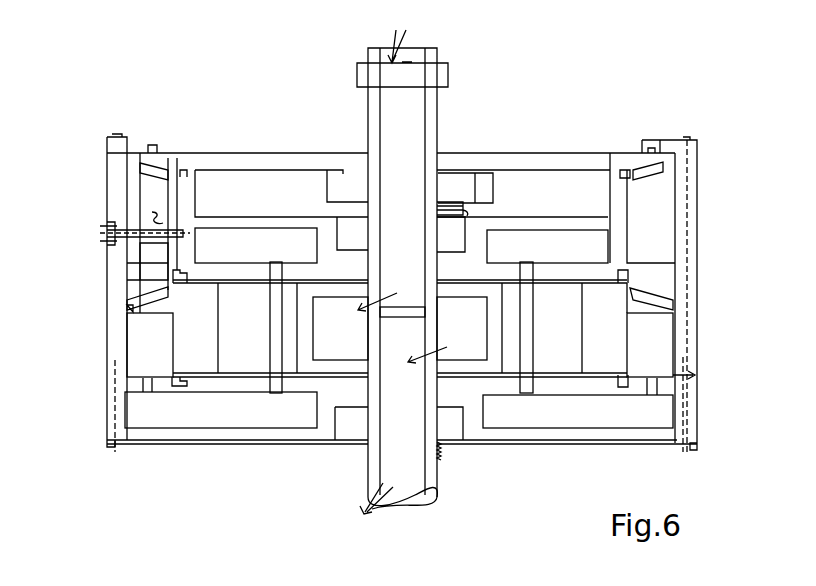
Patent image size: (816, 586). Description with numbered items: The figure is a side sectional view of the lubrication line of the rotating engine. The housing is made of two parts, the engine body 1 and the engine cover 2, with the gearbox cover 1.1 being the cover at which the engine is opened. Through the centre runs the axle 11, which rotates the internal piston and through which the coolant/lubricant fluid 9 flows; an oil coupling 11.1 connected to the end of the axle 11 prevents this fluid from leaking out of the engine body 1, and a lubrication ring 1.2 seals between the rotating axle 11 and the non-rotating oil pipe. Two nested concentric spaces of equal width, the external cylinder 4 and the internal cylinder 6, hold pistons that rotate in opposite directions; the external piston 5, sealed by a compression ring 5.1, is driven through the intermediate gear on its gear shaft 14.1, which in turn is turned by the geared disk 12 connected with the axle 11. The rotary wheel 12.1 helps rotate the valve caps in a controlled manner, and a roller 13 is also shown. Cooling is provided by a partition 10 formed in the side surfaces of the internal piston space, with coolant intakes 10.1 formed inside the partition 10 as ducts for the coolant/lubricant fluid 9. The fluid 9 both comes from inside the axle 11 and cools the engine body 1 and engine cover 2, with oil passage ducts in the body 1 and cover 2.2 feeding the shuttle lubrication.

The engine body 1 is at (690, 215).
The gearbox cover 1.1 is at (655, 141).
The lubrication ring 1.2 is at (86, 328).
The engine cover 2 is at (482, 388).
The engine cover 2.2 is at (148, 390).
The external cylinder 4 is at (255, 347).
The external piston 5 is at (205, 351).
The compression ring 5.1 is at (618, 276).
The internal cylinder 6 is at (290, 298).
The coolant/lubricant fluid 9 is at (404, 180).
The partition 10 is at (269, 304).
The coolant intake 10.1 is at (277, 263).
The axle 11 is at (410, 130).
The oil coupling 11.1 is at (444, 76).
The geared disk 12 is at (520, 154).
The rotary wheel 12.1 is at (490, 188).
The roller 13 is at (438, 225).
The gear shaft 14.1 is at (107, 236).